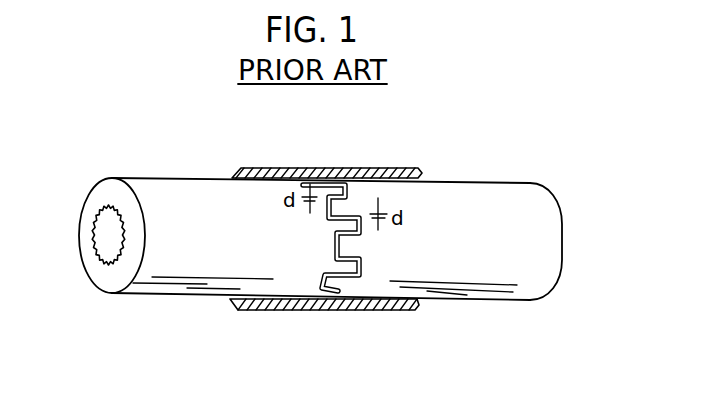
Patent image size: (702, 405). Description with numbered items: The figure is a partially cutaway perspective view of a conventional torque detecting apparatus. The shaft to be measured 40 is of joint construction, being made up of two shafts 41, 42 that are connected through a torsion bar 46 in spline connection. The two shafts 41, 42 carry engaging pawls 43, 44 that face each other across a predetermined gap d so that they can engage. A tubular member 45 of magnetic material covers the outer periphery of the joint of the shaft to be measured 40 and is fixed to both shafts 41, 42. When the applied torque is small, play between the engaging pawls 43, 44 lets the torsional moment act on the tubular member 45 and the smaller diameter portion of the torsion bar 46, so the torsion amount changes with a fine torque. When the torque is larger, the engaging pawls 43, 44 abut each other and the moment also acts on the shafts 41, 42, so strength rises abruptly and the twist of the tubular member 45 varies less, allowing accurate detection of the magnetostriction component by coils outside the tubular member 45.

The shaft to be measured 40 is at (178, 178).
The shaft 41 is at (187, 263).
The shaft 42 is at (490, 263).
The engaging pawl 43 is at (357, 240).
The engaging pawl 44 is at (325, 263).
The tubular member 45 is at (401, 170).
The torsion bar 46 is at (105, 240).